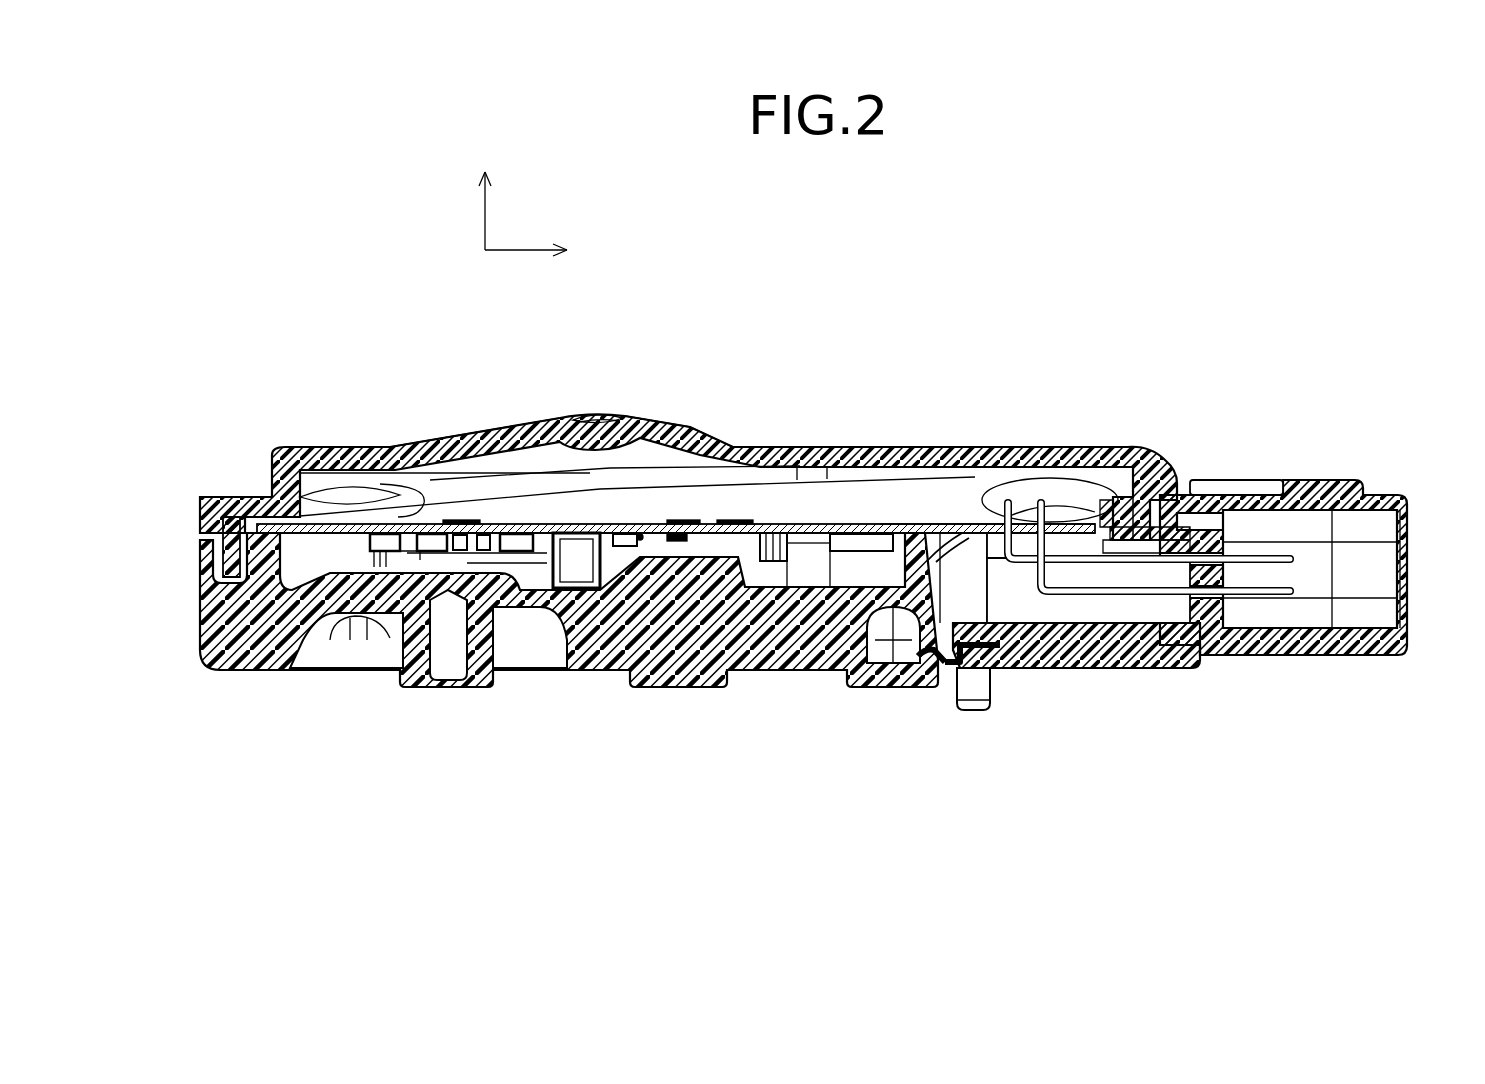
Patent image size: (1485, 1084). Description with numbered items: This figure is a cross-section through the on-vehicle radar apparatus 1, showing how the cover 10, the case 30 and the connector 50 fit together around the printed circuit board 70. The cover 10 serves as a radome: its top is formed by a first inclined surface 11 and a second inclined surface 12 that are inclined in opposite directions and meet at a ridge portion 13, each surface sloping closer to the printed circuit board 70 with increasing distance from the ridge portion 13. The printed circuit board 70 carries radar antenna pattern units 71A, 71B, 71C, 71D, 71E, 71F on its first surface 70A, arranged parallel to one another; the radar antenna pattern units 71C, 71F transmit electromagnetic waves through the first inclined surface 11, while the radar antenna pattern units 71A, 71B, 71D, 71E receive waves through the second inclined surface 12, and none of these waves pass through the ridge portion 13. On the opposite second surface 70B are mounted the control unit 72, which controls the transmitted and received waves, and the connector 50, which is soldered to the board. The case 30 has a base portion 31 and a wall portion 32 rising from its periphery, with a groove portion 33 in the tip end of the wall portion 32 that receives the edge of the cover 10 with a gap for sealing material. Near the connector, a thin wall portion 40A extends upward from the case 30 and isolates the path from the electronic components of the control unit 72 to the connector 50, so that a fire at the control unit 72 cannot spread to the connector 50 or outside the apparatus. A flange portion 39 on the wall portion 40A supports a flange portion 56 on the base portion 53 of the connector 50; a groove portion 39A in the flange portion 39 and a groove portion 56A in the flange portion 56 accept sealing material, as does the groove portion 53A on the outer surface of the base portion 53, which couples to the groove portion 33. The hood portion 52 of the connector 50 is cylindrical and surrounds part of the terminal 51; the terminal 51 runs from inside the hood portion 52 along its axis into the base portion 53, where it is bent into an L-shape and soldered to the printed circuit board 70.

The on-vehicle radar apparatus 1 is at (310, 287).
The cover 10 is at (1131, 445).
The first inclined surface 11 is at (480, 432).
The second inclined surface 12 is at (688, 392).
The ridge portion 13 is at (601, 416).
The case 30 is at (196, 608).
The base portion 31 is at (712, 650).
The wall portion 32 is at (202, 546).
The groove portion 33 is at (236, 530).
The flange portion 39 is at (950, 680).
The groove portion 39A is at (915, 665).
The wall portion 40A is at (932, 558).
The connector 50 is at (1360, 482).
The terminal 51 is at (1297, 560).
The hood portion 52 is at (1405, 510).
The base portion 53 is at (1100, 662).
The groove portion 53A is at (1133, 528).
The flange portion 56 is at (1030, 648).
The clip bent portion 56A is at (993, 655).
The printed circuit board 70 is at (655, 522).
The first surface 70A is at (805, 523).
The second surface 70B is at (773, 545).
The radar antenna pattern unit 71A is at (742, 523).
The radar antenna pattern unit 71B is at (700, 521).
The radar antenna pattern unit 71C is at (470, 521).
The radar antenna pattern unit 71D is at (672, 467).
The radar antenna pattern unit 71E is at (596, 462).
The radar antenna pattern unit 71F is at (415, 470).
The control unit 72 is at (580, 565).